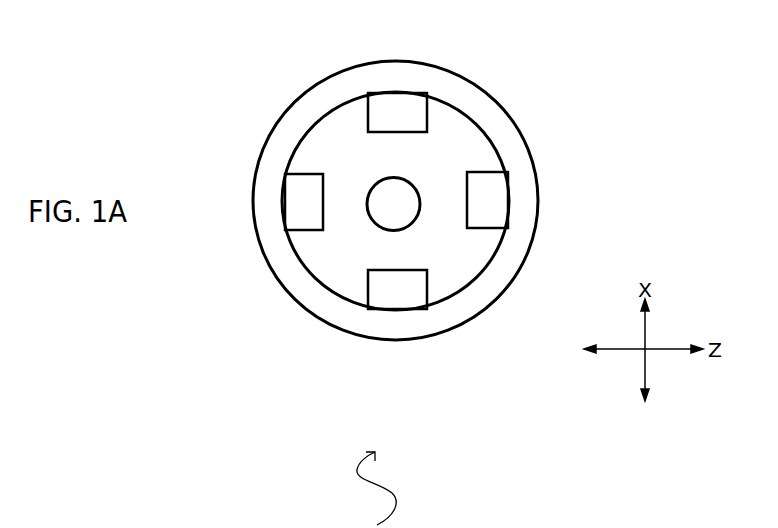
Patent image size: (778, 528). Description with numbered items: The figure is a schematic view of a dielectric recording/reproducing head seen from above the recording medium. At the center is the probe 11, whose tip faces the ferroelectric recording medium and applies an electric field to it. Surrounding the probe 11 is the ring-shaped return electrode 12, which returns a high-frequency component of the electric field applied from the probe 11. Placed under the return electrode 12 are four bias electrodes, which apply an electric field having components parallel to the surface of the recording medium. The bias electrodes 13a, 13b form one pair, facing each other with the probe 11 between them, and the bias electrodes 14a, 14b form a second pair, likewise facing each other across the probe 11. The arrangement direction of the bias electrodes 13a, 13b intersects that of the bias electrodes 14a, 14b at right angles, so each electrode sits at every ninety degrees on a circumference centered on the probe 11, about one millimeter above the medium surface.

The probe 11 is at (393, 197).
The return electrode 12 is at (505, 130).
The bias electrode 13a is at (290, 197).
The bias electrode 13b is at (495, 202).
The bias electrode 14a is at (388, 100).
The bias electrode 14b is at (393, 300).